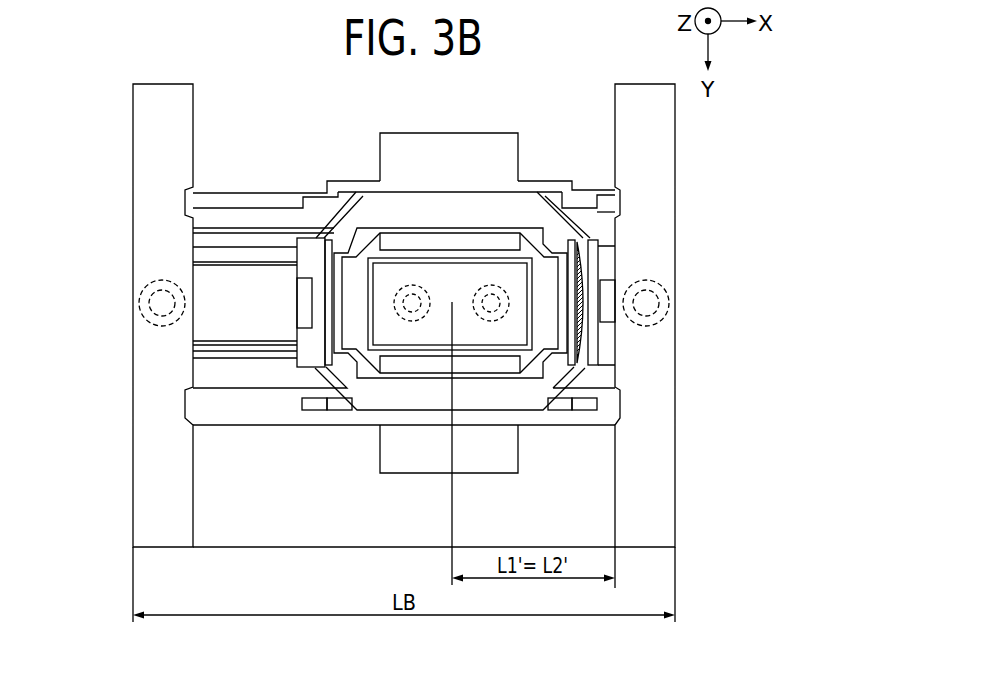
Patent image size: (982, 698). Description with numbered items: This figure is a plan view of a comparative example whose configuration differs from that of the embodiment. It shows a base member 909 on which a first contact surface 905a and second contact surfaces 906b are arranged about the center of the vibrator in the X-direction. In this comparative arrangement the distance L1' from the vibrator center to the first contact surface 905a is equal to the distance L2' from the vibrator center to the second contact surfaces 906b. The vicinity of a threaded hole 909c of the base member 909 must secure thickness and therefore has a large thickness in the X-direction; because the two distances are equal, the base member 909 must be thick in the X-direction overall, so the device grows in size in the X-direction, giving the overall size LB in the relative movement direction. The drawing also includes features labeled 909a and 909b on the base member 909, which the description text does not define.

The base member 909 is at (146, 143).
The curved biasing portion 909a is at (615, 333).
The support rail portion 909b is at (615, 222).
The threaded hole 909c is at (142, 297).
The first contact surface 905a is at (297, 303).
The second contact surfaces 906b is at (297, 257).